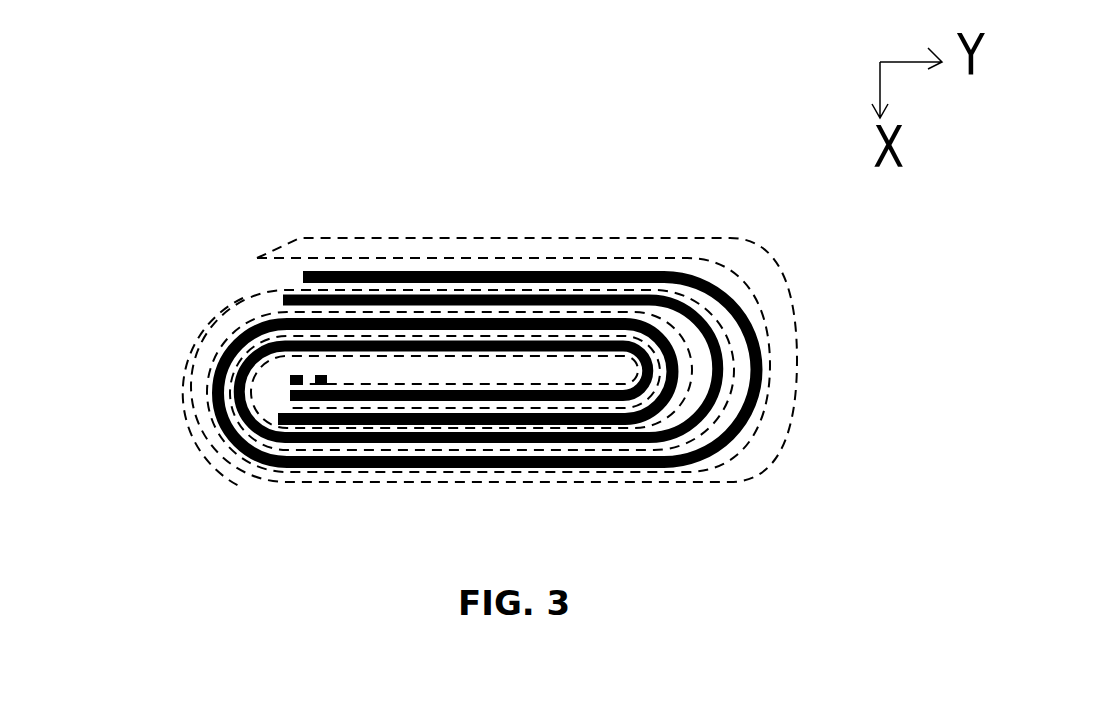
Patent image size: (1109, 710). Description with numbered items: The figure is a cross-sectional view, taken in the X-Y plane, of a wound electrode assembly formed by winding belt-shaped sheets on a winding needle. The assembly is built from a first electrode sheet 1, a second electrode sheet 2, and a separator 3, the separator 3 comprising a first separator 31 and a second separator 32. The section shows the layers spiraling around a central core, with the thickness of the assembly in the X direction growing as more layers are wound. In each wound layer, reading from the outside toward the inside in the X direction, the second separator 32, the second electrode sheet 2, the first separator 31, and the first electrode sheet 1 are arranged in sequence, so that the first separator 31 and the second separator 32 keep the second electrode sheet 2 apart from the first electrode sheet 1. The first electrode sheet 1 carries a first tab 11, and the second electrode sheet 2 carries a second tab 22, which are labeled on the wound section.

The first electrode sheet 1 is at (655, 428).
The first tab 11 is at (305, 353).
The second electrode sheet 2 is at (643, 327).
The second tab 22 is at (597, 330).
The separator 3 is at (910, 290).
The first separator 31 is at (743, 330).
The second separator 32 is at (772, 390).